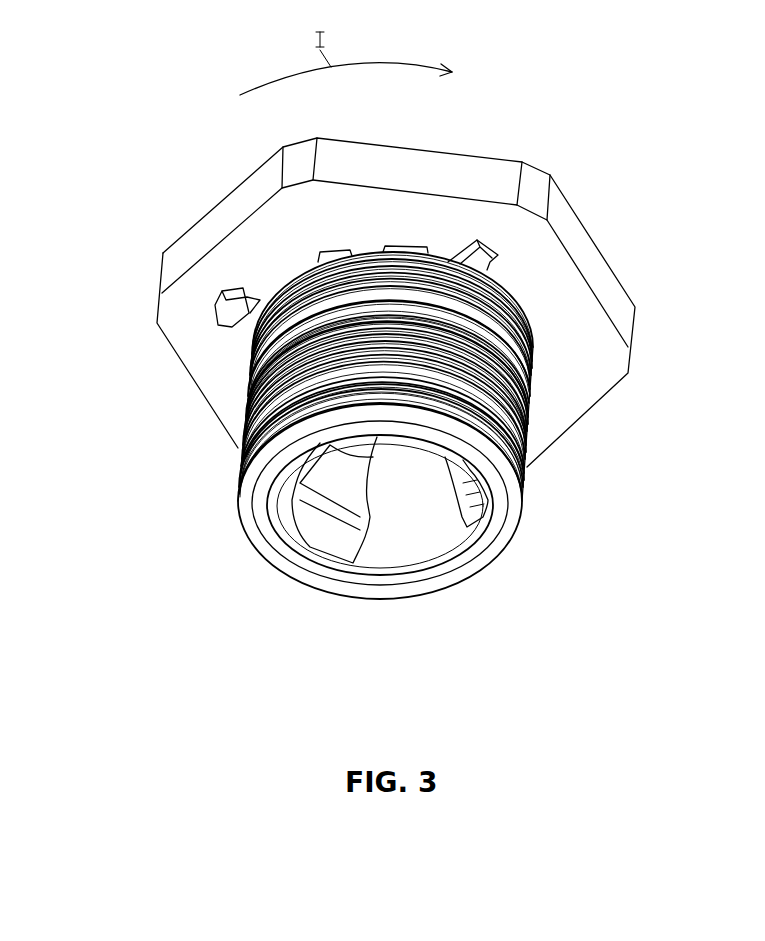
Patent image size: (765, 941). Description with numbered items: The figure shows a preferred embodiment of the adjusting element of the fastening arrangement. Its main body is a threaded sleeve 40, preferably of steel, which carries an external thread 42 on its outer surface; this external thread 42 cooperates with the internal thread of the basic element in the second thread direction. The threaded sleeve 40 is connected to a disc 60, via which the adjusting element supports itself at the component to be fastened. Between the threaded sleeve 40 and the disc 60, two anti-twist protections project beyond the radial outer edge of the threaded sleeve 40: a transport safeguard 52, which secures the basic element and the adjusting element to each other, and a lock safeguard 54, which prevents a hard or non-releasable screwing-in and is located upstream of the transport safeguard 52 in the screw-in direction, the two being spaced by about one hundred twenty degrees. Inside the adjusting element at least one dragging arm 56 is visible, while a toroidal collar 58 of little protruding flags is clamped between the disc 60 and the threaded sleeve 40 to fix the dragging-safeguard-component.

The threaded sleeve 40 is at (503, 542).
The external thread 42 is at (253, 395).
The transport safeguard 52 is at (232, 303).
The lock safeguard 54 is at (480, 263).
The dragging arm 56 is at (462, 508).
The toroidal collar 58 is at (400, 245).
The disc 60 is at (593, 255).